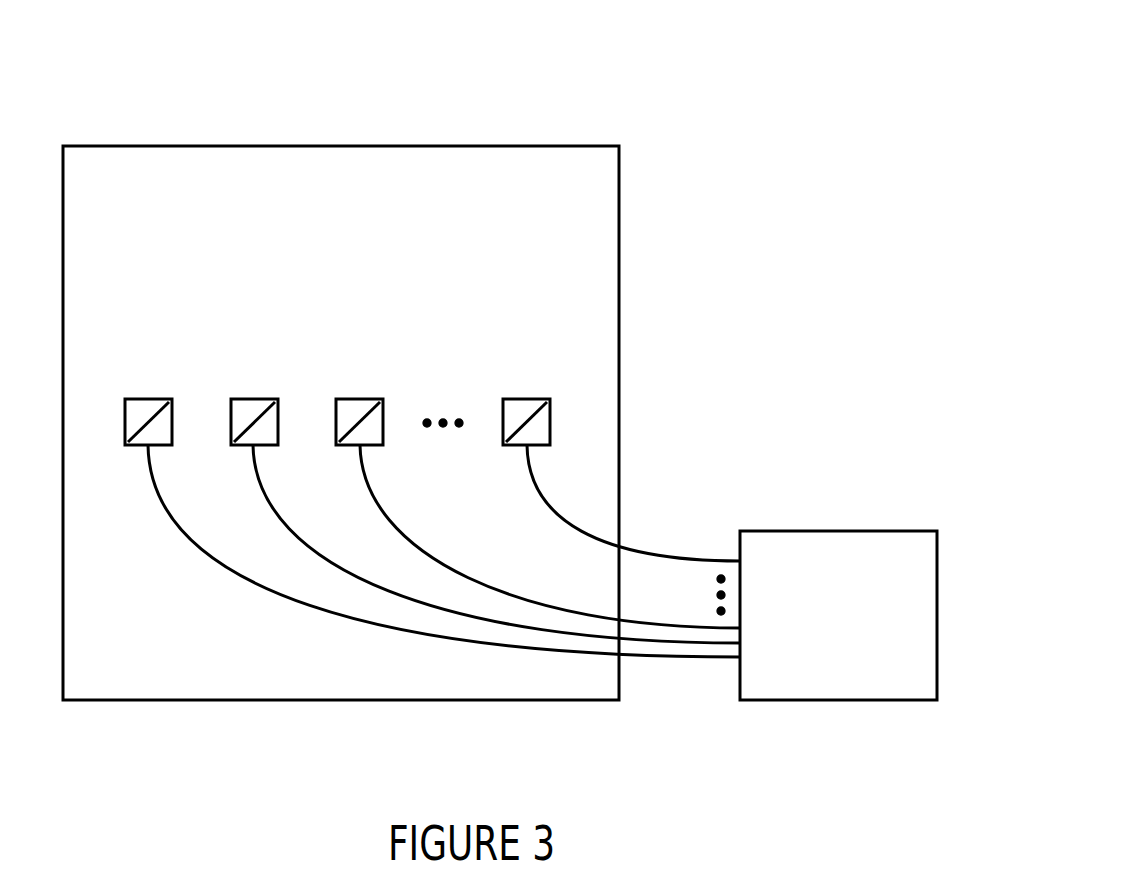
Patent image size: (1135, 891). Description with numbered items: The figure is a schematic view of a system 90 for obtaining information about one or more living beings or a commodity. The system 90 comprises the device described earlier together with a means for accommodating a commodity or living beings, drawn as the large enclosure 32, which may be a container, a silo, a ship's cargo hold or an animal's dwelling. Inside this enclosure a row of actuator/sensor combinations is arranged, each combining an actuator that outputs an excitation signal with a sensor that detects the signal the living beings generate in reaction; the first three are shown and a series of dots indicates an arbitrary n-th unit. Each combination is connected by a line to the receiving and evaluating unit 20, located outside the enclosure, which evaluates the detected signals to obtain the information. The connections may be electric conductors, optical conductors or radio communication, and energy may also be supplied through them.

The system 90 is at (838, 40).
The housing 32 is at (619, 215).
The evaluator 20 is at (852, 633).